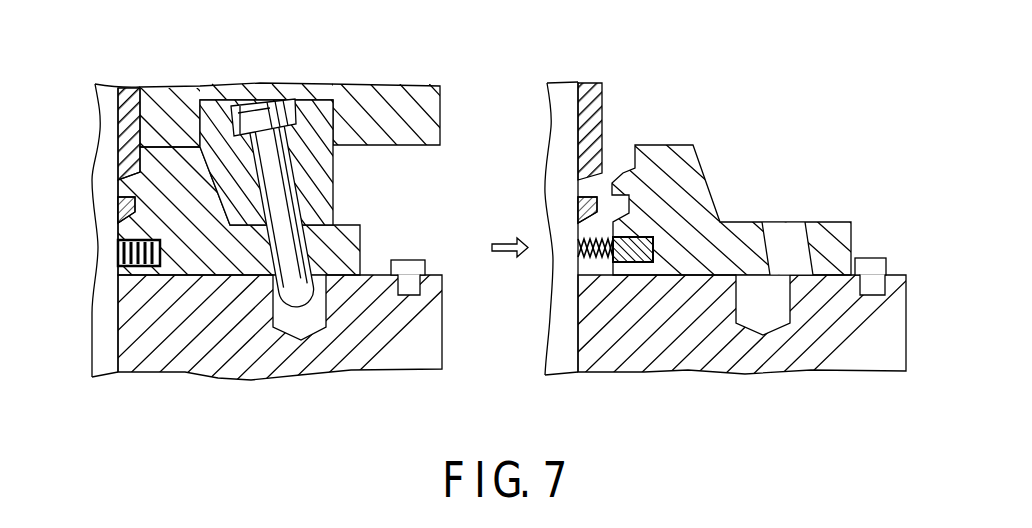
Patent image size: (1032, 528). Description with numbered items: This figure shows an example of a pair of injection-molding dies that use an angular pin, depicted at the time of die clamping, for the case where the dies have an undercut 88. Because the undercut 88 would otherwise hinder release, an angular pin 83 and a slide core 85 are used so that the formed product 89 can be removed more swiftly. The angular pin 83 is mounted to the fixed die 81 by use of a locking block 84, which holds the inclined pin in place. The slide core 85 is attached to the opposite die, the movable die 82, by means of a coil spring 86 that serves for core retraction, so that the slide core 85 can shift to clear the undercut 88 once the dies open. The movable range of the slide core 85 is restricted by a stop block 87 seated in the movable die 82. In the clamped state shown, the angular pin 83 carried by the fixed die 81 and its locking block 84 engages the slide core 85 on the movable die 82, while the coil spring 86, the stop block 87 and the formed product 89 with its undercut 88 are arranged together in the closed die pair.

The fixed die 81 is at (442, 100).
The movable die 82 is at (398, 353).
The angular pin 83 is at (262, 104).
The locking block 84 is at (317, 100).
The slide core 85 is at (178, 163).
The coil spring 86 is at (118, 257).
The stop block 87 is at (408, 260).
The undercut 88 is at (118, 190).
The formed product 89 is at (134, 88).